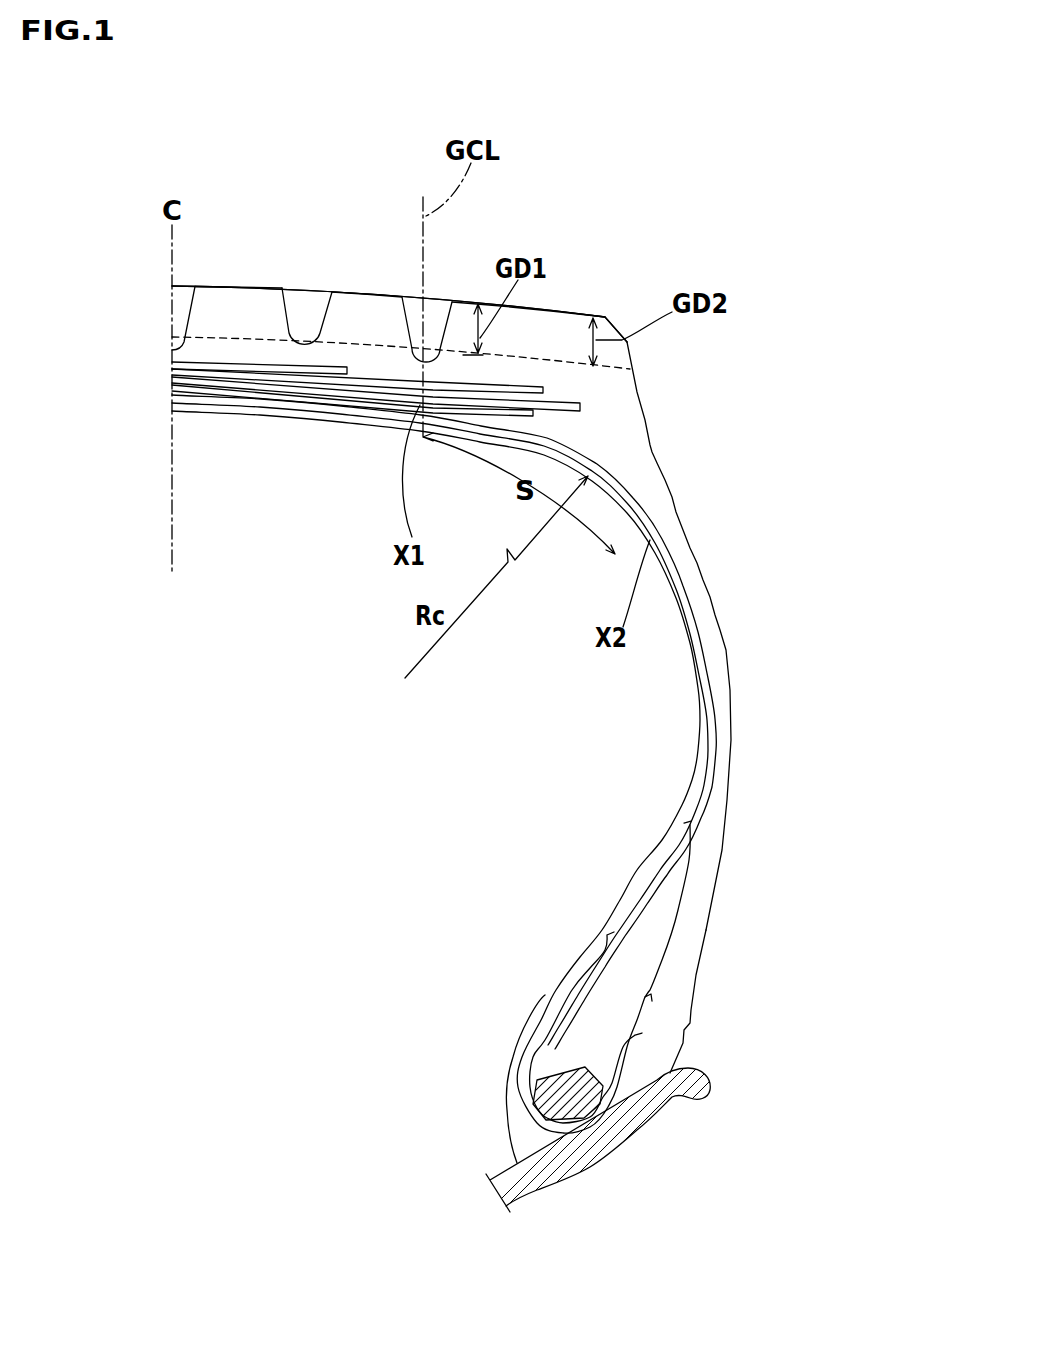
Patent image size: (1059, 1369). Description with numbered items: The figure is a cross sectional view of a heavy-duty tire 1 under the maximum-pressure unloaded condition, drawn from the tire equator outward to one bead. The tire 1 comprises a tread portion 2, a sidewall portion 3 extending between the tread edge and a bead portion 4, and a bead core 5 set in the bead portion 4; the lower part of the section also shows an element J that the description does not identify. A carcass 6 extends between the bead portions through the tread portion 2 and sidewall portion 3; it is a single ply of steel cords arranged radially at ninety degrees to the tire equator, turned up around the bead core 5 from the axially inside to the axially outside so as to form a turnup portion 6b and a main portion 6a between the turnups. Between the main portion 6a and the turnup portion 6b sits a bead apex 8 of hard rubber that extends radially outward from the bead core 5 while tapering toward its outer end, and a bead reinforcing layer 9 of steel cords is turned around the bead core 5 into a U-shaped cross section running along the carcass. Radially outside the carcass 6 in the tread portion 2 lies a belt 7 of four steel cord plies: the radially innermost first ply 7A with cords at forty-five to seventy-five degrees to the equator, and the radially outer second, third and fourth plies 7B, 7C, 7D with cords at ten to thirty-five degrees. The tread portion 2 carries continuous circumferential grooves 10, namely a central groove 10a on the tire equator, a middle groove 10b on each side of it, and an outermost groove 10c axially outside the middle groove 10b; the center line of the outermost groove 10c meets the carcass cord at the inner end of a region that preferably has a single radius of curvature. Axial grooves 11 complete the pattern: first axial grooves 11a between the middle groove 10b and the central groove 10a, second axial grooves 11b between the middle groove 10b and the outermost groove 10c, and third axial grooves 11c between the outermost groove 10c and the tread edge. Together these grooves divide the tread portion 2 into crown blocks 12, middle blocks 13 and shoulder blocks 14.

The heavy-duty tire 1 is at (615, 219).
The tread portion 2 is at (376, 230).
The sidewall portion 3 is at (752, 670).
The bead portion 4 is at (703, 1057).
The bead core 5 is at (545, 1100).
The carcass 6 is at (492, 822).
The main portion 6a is at (645, 893).
The turnup portion 6b is at (643, 998).
The belt 7 is at (78, 325).
The first ply 7A is at (172, 388).
The second ply 7B is at (172, 380).
The third ply 7C is at (172, 372).
The fourth ply 7D is at (172, 365).
The bead apex 8 is at (664, 858).
The bead reinforcing layer 9 is at (545, 1020).
The circumferential grooves 10 is at (358, 247).
The central groove 10a is at (190, 278).
The middle groove 10b is at (309, 280).
The outermost groove 10c is at (440, 298).
The axial grooves 11 is at (462, 379).
The first axial grooves 11a is at (217, 327).
The second axial grooves 11b is at (336, 332).
The third axial grooves 11c is at (557, 357).
The crown blocks 12 is at (236, 278).
The middle blocks 13 is at (381, 280).
The shoulder blocks 14 is at (558, 301).
The rim J is at (557, 1200).